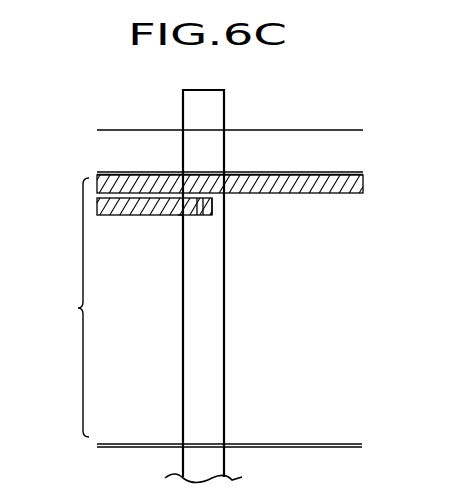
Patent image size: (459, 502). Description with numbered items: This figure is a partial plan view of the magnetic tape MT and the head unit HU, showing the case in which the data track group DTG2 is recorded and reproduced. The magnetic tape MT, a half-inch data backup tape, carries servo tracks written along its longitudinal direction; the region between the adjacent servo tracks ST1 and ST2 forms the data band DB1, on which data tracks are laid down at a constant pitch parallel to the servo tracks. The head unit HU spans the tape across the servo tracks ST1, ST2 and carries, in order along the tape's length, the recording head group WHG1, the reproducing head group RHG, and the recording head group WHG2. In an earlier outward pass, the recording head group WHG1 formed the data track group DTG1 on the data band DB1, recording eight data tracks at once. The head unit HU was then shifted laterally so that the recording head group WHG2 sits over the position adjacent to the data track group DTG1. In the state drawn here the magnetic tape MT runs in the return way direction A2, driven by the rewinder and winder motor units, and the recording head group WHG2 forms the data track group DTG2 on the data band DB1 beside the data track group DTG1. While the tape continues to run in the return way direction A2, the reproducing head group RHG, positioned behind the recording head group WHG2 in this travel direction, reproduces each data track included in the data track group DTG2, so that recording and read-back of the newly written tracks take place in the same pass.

The magnetic tape MT is at (299, 126).
The return way direction A2 is at (118, 117).
The head unit HU is at (215, 112).
The servo track ST1 is at (200, 165).
The servo track ST2 is at (200, 454).
The data band DB1 is at (56, 307).
The data track group DTG1 is at (348, 195).
The data track group DTG2 is at (108, 217).
The recording head group WHG1 is at (180, 216).
The recording head group WHG2 is at (206, 216).
The reproducing head group RHG is at (200, 216).